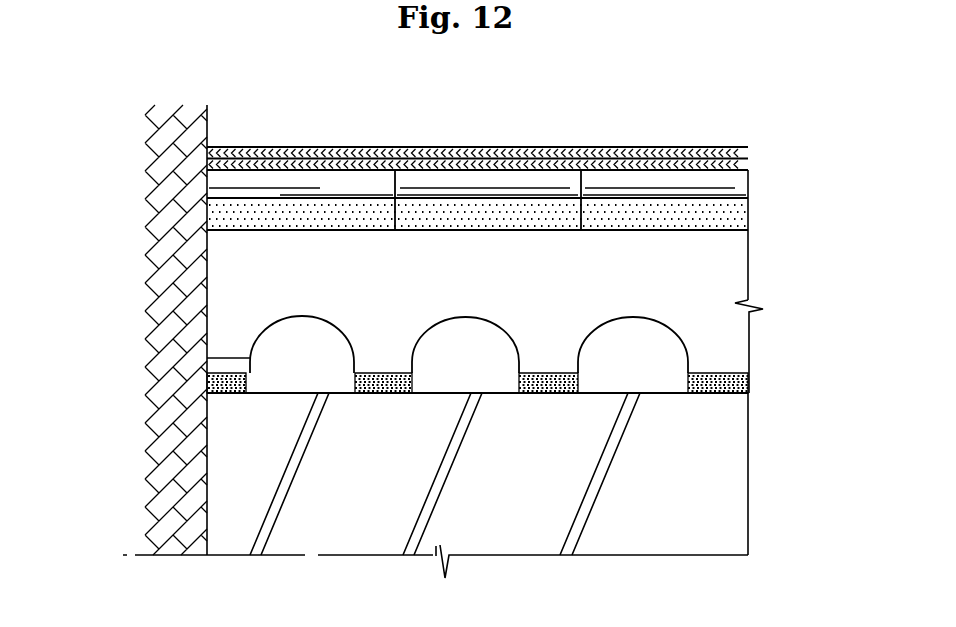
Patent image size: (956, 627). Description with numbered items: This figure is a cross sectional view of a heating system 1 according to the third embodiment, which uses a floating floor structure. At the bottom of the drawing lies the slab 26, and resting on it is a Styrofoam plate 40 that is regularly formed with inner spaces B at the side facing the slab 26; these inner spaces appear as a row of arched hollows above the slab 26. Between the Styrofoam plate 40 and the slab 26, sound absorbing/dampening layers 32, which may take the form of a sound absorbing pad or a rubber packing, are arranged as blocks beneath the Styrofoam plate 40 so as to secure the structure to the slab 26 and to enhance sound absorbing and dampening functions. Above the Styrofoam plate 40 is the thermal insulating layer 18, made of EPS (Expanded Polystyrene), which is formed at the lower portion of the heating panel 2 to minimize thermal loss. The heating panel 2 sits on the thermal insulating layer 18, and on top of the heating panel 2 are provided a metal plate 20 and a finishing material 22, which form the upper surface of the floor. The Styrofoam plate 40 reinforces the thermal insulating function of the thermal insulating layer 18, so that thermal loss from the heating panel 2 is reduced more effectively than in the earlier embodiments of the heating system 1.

The heating system 1 is at (770, 107).
The heating panel 2 is at (737, 178).
The thermal insulating layer 18 is at (737, 213).
The metal plate 20 is at (443, 150).
The finishing material 22 is at (373, 150).
The slab 26 is at (728, 498).
The sound absorbing/dampening layer 32 is at (752, 380).
The Styrofoam plate 40 is at (737, 270).
The inner spaces B is at (297, 347).